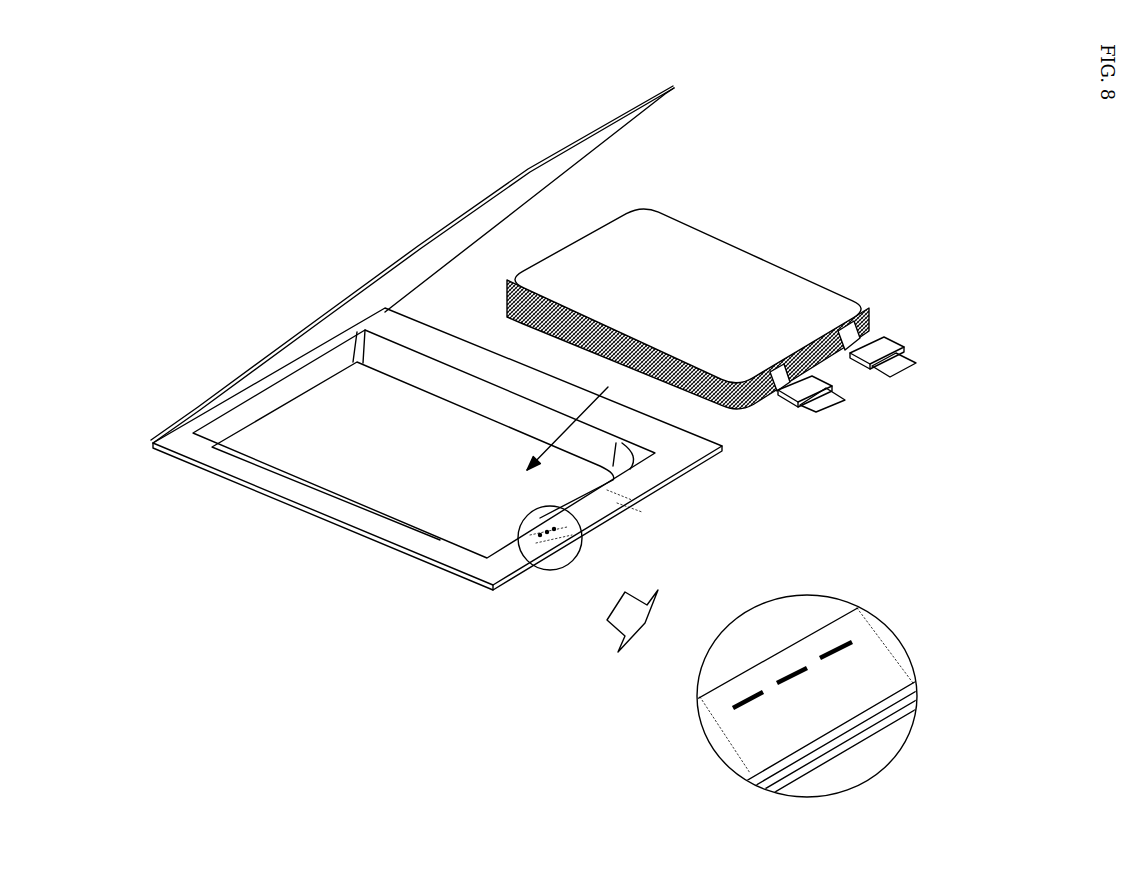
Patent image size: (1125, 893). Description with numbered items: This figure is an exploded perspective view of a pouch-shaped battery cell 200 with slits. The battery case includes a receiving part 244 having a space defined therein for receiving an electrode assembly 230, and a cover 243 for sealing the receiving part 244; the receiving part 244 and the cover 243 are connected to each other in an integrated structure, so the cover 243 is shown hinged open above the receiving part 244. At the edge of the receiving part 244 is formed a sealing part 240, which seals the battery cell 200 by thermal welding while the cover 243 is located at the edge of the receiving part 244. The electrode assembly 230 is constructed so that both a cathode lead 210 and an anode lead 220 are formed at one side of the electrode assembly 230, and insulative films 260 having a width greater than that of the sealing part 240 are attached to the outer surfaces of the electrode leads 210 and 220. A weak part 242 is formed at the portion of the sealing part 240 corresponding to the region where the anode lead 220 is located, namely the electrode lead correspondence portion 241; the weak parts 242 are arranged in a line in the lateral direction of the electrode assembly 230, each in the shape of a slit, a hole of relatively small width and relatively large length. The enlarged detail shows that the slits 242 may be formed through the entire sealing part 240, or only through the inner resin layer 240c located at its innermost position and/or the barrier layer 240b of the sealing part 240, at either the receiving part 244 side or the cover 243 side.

The battery cell 200 is at (177, 117).
The cathode lead 210 is at (903, 364).
The anode lead 220 is at (837, 406).
The electrode assembly 230 is at (765, 276).
The sealing part 240 is at (376, 528).
The barrier layer 240b is at (917, 698).
The inner resin layer 240c is at (917, 680).
The electrode lead correspondence portion 241 is at (877, 670).
The weak part 242 is at (713, 706).
The cover 243 is at (468, 208).
The receiving part 244 is at (480, 523).
The insulative film 260 is at (904, 348).